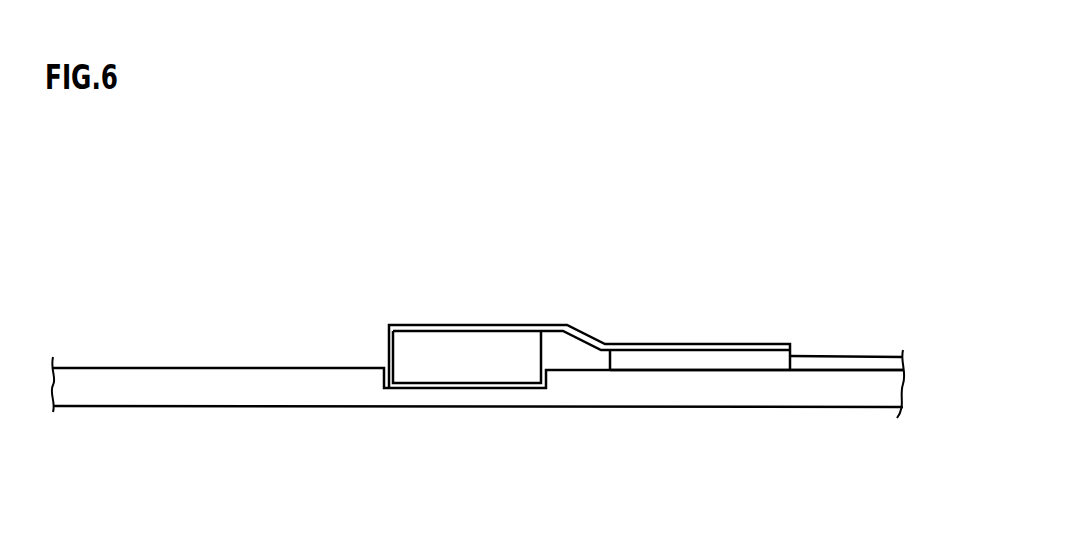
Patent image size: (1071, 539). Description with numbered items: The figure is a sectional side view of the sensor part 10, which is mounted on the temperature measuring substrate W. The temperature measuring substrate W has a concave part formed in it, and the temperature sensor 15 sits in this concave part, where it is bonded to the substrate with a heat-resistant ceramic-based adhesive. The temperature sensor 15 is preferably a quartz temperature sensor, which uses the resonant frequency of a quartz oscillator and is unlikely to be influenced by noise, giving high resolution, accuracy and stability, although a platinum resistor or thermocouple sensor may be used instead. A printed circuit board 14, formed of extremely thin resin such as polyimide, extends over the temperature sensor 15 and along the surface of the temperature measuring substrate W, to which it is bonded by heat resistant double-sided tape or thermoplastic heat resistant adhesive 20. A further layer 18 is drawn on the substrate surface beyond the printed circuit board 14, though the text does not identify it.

The sensor part 10 is at (497, 222).
The printed circuit board 14 is at (580, 327).
The temperature sensor 15 is at (483, 362).
The insulating layer 18 is at (848, 357).
The heat resistant double-sided tape or thermoplastic heat resistant adhesive 20 is at (712, 360).
The temperature measuring substrate W is at (232, 390).